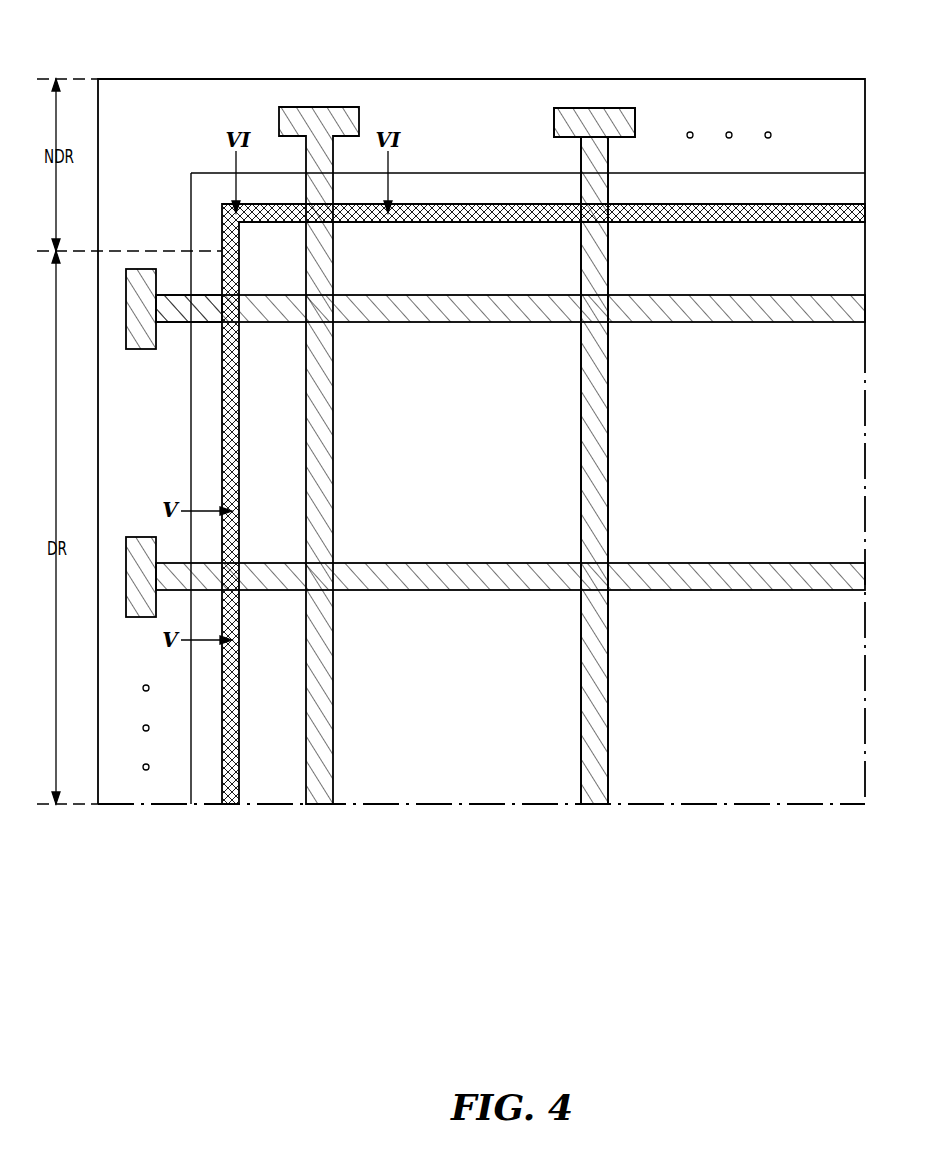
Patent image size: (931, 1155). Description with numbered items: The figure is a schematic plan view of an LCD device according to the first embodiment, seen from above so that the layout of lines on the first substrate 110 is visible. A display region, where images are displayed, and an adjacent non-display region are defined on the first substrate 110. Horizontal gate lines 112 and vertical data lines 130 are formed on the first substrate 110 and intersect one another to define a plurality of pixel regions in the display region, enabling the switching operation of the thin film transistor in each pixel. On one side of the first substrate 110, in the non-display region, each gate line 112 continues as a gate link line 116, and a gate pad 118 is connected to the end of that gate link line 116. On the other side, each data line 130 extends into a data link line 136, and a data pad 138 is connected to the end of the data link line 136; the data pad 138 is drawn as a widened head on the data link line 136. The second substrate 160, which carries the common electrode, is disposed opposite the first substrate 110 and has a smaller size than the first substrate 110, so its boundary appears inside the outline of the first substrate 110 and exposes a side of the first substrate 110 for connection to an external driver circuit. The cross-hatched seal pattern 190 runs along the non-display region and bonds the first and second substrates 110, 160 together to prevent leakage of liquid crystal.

The first substrate 110 is at (751, 103).
The gate line 112 is at (720, 310).
The gate link line 116 is at (170, 323).
The gate pad 118 is at (140, 350).
The data line 130 is at (608, 432).
The data link line 136 is at (608, 153).
The data pad 138 is at (594, 107).
The second substrate 160 is at (803, 173).
The seal pattern 190 is at (717, 213).